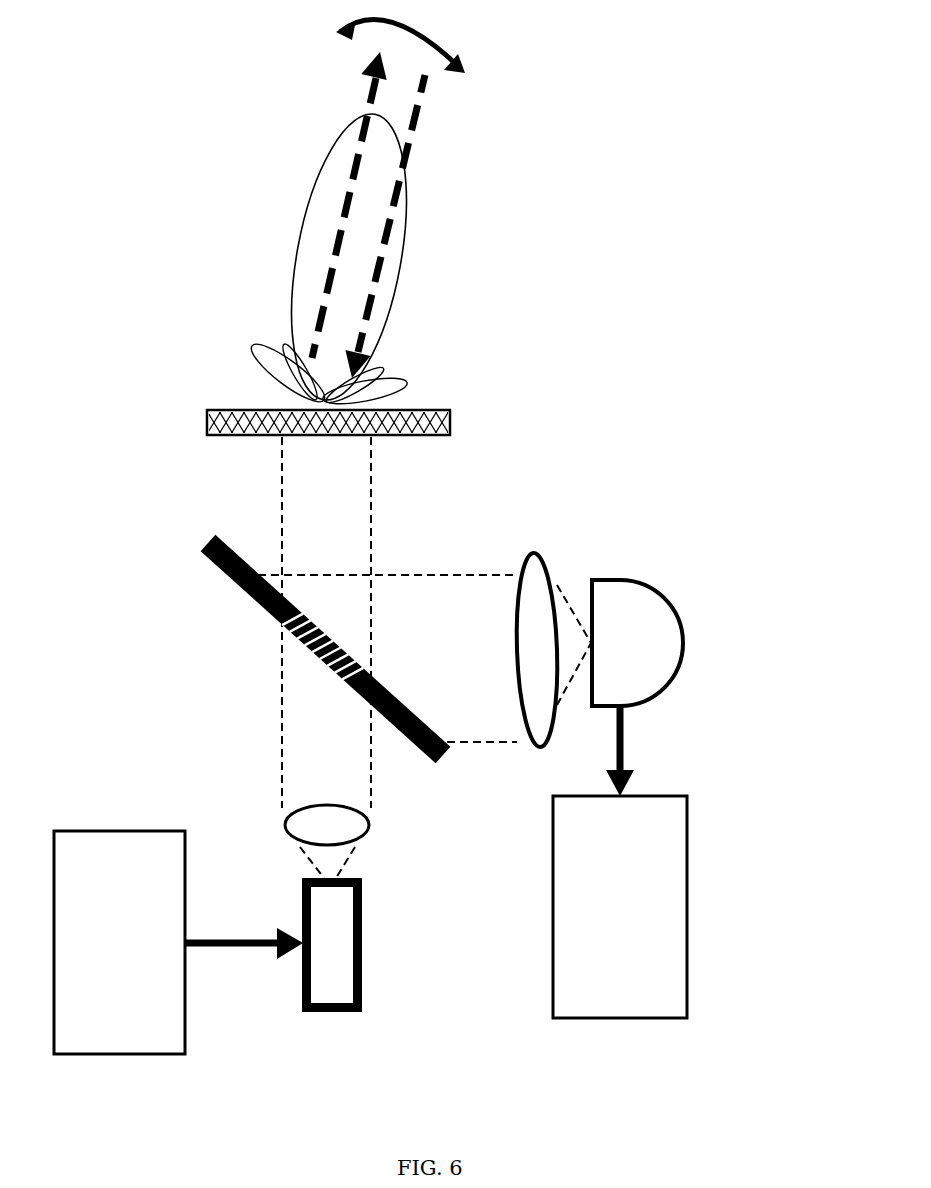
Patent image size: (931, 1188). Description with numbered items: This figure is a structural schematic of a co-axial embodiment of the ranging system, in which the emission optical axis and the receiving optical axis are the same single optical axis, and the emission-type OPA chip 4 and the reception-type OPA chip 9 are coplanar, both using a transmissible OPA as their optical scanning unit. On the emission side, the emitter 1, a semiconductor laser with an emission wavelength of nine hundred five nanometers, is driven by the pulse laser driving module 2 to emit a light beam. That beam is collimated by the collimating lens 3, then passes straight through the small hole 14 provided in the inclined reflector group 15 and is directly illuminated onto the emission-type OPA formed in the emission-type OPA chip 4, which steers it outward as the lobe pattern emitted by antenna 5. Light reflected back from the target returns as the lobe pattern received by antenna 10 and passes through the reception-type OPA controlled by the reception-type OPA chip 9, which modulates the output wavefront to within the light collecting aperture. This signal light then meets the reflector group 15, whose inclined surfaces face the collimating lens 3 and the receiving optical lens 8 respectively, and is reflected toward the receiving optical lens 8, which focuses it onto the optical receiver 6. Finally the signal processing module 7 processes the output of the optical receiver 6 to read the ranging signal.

The emitter 1 is at (332, 1012).
The laser driving module 2 is at (120, 830).
The collimating lens 3 is at (284, 815).
The emission-type OPA chip 4 is at (266, 384).
The reception-type OPA chip 9 is at (207, 410).
The lobe pattern emitted by antenna 5 is at (302, 214).
The lobe pattern received by antenna 10 is at (313, 232).
The optical receiver 6 is at (682, 640).
The signal processing module 7 is at (687, 918).
The receiving optical lens 8 is at (535, 552).
The small hole 14 is at (254, 652).
The reflector group 15 is at (265, 619).